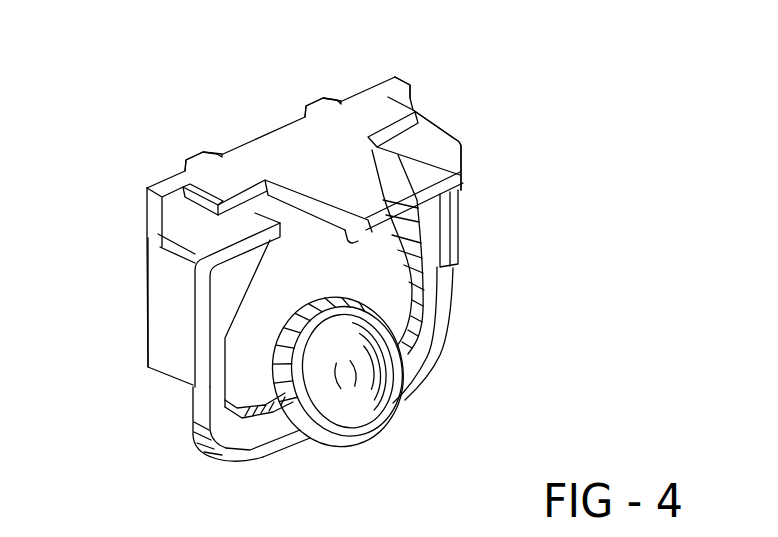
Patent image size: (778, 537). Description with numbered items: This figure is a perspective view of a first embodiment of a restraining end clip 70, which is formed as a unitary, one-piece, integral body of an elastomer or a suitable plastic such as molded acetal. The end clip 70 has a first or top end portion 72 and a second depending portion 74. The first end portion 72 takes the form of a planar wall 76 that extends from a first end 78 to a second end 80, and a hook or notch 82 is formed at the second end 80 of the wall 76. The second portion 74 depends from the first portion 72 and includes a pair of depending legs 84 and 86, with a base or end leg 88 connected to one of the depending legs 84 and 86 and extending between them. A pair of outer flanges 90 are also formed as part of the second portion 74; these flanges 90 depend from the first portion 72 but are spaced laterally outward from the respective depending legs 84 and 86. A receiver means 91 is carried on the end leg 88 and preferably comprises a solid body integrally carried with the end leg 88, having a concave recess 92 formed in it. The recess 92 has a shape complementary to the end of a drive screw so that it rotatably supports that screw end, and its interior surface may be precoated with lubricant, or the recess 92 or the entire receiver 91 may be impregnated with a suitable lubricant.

The restraining end clip 70 is at (486, 95).
The first or top end portion 72 is at (271, 146).
The second depending portion 74 is at (165, 278).
The planar wall 76 is at (370, 172).
The first end 78 is at (236, 146).
The second end 80 is at (443, 226).
The hook or notch 82 is at (355, 245).
The depending leg 84 is at (190, 420).
The depending leg 86 is at (425, 290).
The base or end leg 88 is at (250, 452).
The outer flange 90 is at (163, 316).
The receiver means 91 is at (378, 427).
The concave recess 92 is at (336, 422).